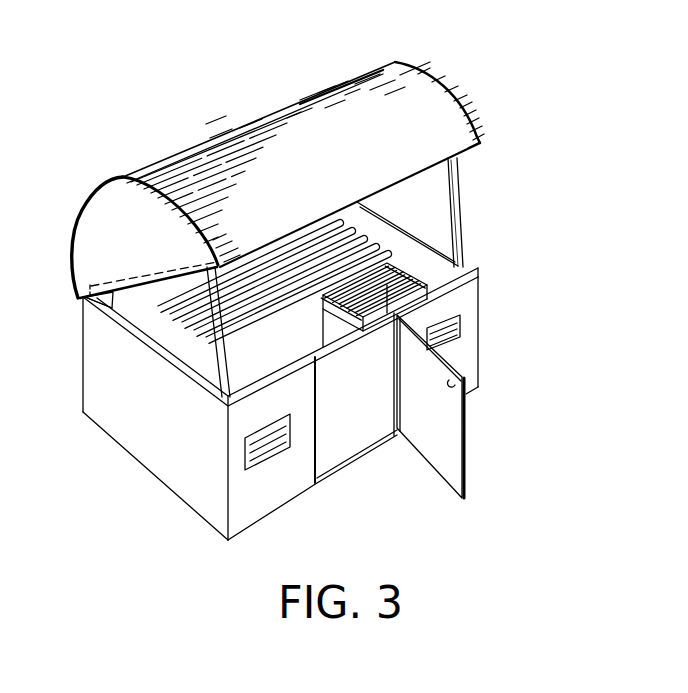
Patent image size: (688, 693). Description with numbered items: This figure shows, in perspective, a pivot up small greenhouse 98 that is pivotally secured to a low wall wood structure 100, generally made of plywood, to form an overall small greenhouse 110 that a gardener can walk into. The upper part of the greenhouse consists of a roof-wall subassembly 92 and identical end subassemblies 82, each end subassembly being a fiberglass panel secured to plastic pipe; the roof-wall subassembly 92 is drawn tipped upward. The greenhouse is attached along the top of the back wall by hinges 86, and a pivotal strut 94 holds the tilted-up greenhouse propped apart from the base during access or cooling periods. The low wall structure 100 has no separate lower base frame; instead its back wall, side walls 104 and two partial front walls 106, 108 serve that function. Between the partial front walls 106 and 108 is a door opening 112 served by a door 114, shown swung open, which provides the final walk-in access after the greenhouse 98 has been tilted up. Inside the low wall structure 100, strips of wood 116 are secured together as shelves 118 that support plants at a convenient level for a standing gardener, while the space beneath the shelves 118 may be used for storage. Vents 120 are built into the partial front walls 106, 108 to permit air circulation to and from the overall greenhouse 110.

The end subassemblies 82 is at (145, 238).
The hinges 86 is at (112, 303).
The roof-wall subassembly 92 is at (460, 107).
The pivotal strut 94 is at (464, 208).
The pivot up small greenhouse 98 is at (333, 83).
The low wall wood structure 100 is at (483, 268).
The side walls 104 is at (157, 478).
The partial front wall 106 is at (353, 426).
The partial front wall 108 is at (480, 357).
The overall small greenhouse 110 is at (203, 518).
The door opening 112 is at (317, 423).
The door 114 is at (467, 450).
The strips of wood 116 is at (372, 347).
The shelves 118 is at (320, 320).
The vents 120 is at (462, 315).